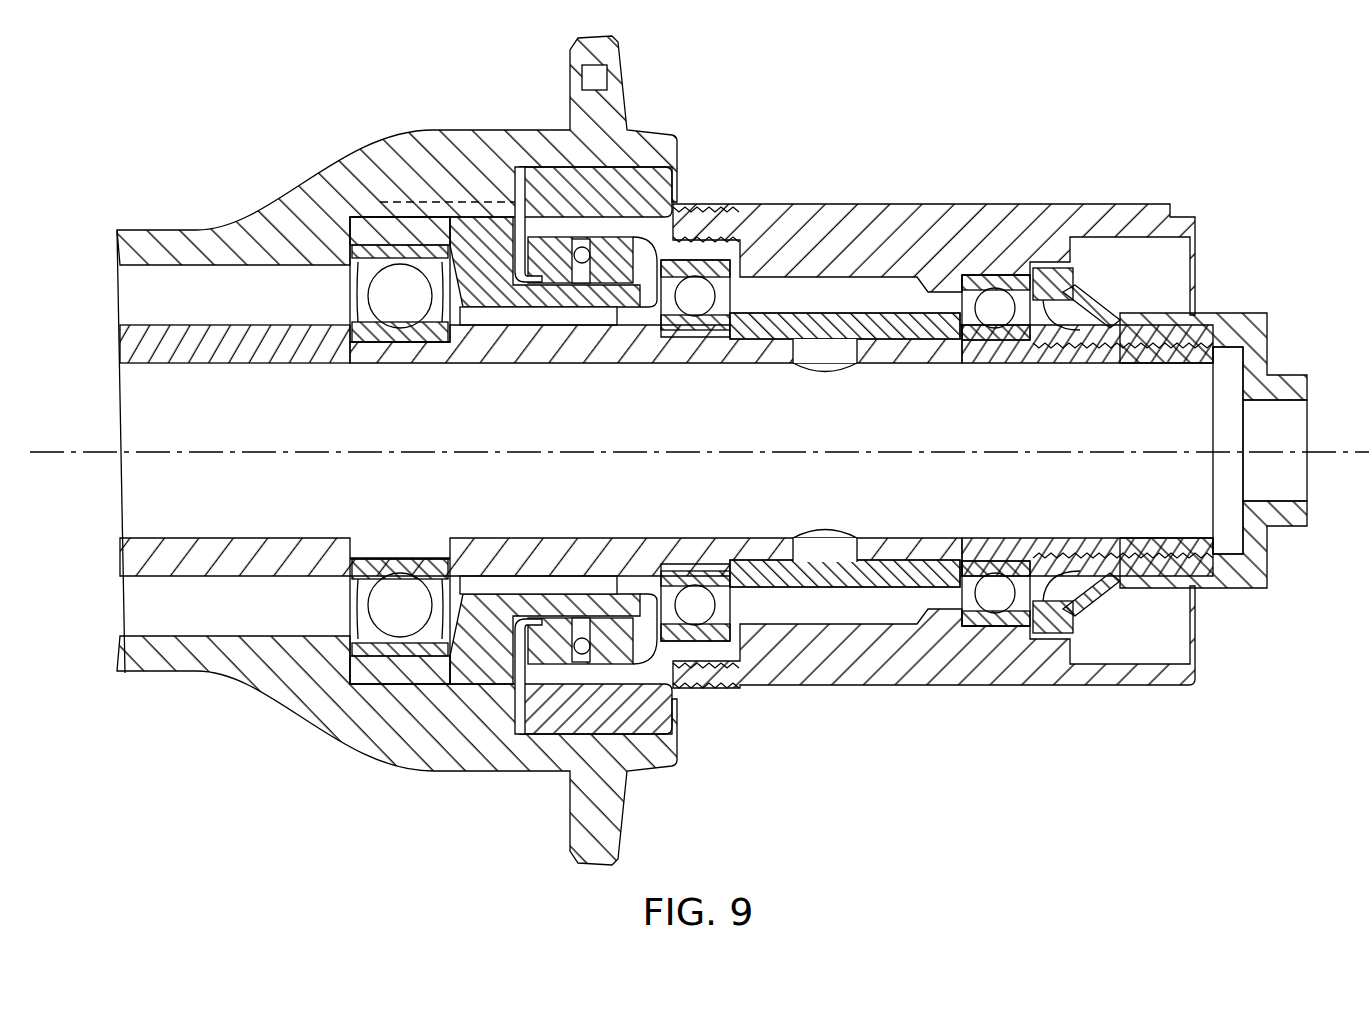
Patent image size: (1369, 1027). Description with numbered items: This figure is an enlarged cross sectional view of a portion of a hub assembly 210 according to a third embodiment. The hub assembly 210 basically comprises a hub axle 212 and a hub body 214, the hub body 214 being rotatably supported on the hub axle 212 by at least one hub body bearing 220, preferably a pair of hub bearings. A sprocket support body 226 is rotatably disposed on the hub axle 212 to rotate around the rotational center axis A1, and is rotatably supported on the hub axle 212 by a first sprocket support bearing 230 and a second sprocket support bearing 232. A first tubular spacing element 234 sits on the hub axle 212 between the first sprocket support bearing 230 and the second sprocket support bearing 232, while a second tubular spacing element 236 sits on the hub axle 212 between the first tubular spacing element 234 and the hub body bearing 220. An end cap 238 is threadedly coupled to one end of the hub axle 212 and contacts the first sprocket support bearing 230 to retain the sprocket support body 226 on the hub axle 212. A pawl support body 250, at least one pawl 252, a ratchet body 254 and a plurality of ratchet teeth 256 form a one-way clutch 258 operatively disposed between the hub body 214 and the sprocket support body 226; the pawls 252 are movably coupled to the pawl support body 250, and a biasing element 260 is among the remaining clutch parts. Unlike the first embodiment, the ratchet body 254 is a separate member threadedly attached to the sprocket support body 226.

The hub assembly 210 is at (230, 128).
The hub axle 212 is at (188, 320).
The hub body 214 is at (327, 168).
The hub body bearing 220 is at (407, 662).
The sprocket support body 226 is at (850, 202).
The first sprocket support bearing 230 is at (993, 262).
The second sprocket support bearing 232 is at (708, 248).
The first tubular spacing element 234 is at (857, 588).
The second tubular spacing element 236 is at (577, 336).
The end cap 238 is at (1233, 310).
The pawl support body 250 is at (497, 312).
The pawl 252 is at (603, 236).
The ratchet body 254 is at (643, 172).
The ratchet teeth 256 is at (512, 262).
The one-way clutch 258 is at (560, 156).
The biasing element 260 is at (580, 643).
The rotational center axis A1 is at (1338, 455).